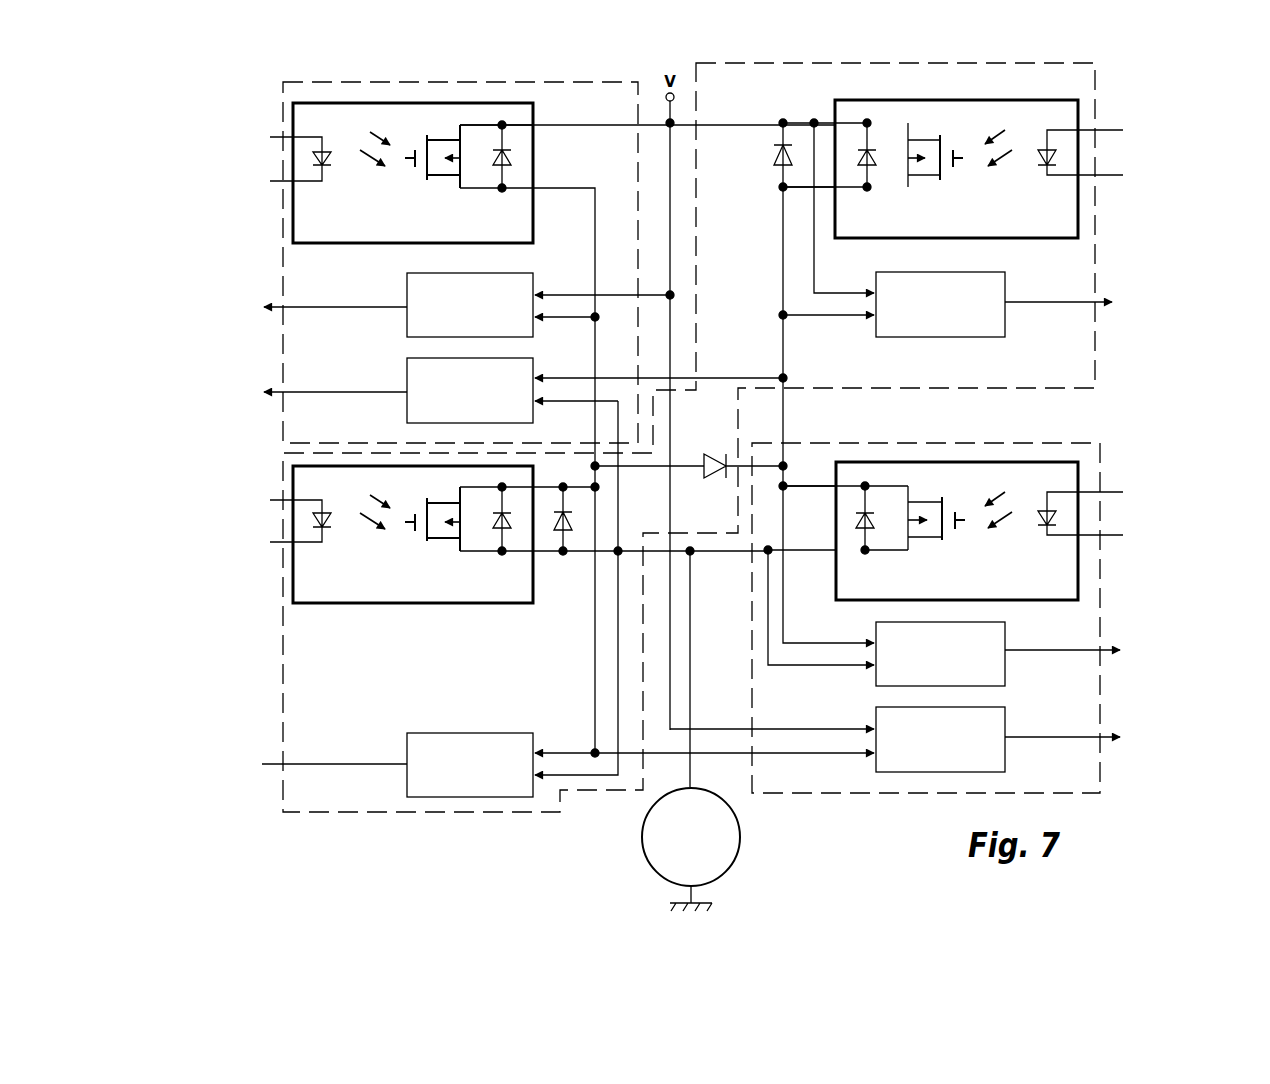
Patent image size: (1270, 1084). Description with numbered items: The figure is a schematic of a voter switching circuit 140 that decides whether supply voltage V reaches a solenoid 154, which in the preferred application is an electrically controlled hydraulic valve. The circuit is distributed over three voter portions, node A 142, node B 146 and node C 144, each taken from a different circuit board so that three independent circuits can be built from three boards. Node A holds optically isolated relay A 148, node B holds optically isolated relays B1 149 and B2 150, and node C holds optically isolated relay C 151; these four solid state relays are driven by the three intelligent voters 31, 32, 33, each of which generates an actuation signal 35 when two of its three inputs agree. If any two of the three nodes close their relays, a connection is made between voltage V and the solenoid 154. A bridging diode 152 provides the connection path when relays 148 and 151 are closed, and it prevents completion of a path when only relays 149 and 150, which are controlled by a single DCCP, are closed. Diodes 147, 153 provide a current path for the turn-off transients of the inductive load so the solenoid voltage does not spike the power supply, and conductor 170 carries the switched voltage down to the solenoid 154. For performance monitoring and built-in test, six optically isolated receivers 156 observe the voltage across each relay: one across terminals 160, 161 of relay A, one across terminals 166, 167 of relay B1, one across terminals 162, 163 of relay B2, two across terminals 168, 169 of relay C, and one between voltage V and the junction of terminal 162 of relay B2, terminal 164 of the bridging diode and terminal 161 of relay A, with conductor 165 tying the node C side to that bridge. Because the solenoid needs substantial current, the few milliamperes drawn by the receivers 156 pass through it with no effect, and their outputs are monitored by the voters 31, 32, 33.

The voter switching circuit 140 is at (1152, 92).
The node A 142 is at (452, 83).
The node C 144 is at (826, 65).
The node B 146 is at (852, 794).
The diode 147 is at (569, 540).
The optically isolated relay A 148 is at (312, 244).
The optically isolated relay B1 149 is at (923, 100).
The optically isolated relay B2 150 is at (342, 604).
The optically isolated relay C 151 is at (1010, 600).
The bridging diode 152 is at (712, 458).
The diode 153 is at (773, 156).
The solenoid 154 is at (643, 836).
The optically isolated receiver 156 is at (1022, 772).
The terminal 160 is at (555, 125).
The terminal 161 is at (555, 188).
The terminal 162 is at (546, 487).
The terminal 163 is at (545, 553).
The terminal 164 is at (683, 467).
The conductor 165 is at (745, 462).
The terminal 166 is at (833, 122).
The terminal 167 is at (822, 190).
The terminal 168 is at (805, 486).
The terminal 169 is at (798, 551).
The conductor 170 is at (691, 557).
The intelligent voter 31 is at (207, 278).
The intelligent voter 32 is at (693, 461).
The intelligent voter 33 is at (1182, 627).
The actuation signal 35 is at (691, 700).